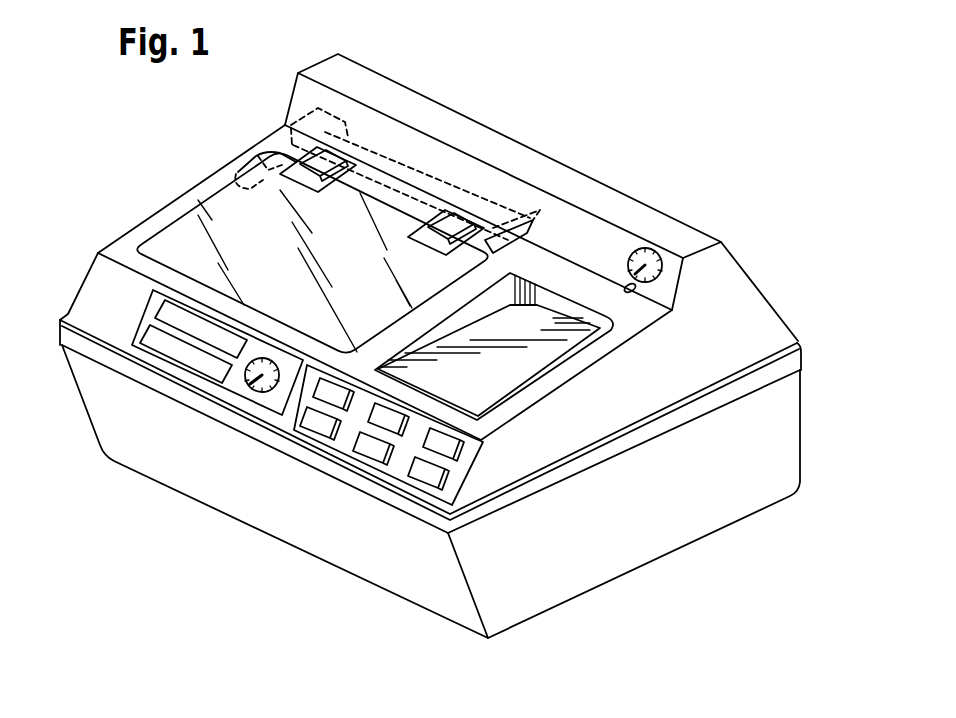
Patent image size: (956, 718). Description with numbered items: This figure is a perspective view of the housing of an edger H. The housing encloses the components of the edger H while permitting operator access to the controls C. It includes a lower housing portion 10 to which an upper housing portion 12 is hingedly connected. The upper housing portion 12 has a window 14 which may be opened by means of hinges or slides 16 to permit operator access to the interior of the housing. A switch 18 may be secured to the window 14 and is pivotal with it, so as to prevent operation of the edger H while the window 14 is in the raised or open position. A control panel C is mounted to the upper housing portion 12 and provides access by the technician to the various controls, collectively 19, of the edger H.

The lower housing portion 10 is at (728, 493).
The upper housing portion 12 is at (737, 310).
The window 14 is at (190, 222).
The hinges or slides 16 is at (323, 163).
The switch 18 is at (247, 165).
The controls 19 is at (318, 422).
The control panel C is at (112, 295).
The edger H is at (638, 194).